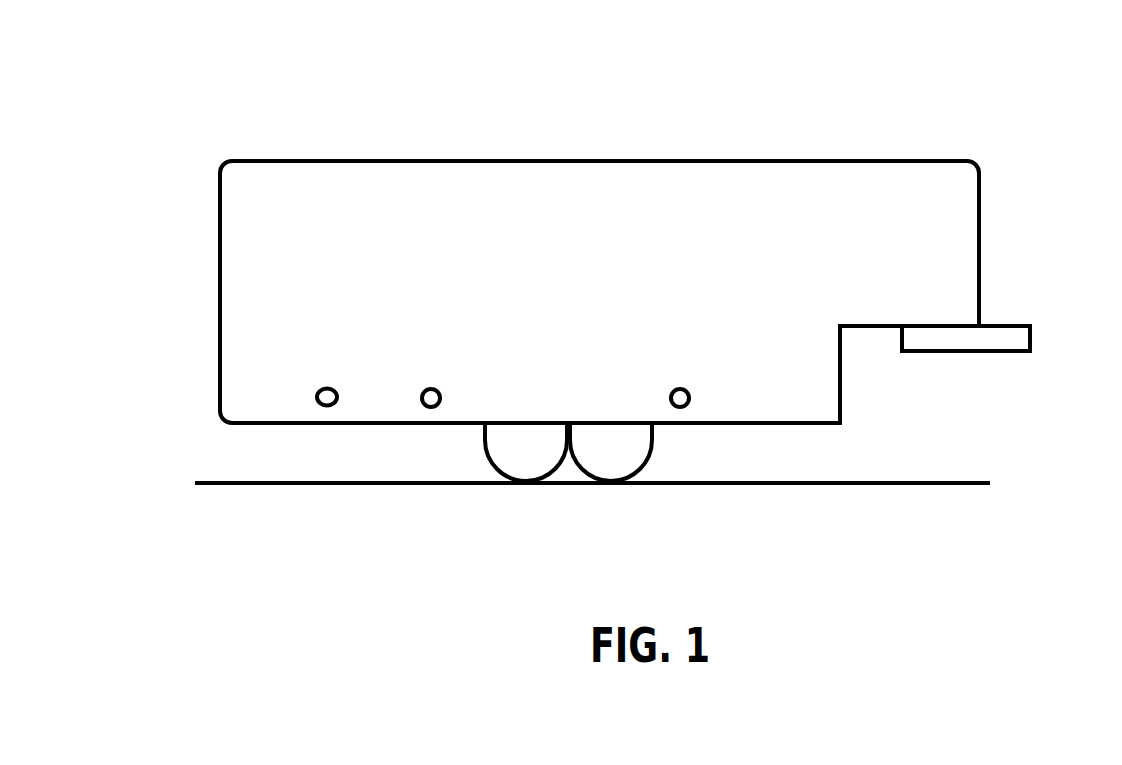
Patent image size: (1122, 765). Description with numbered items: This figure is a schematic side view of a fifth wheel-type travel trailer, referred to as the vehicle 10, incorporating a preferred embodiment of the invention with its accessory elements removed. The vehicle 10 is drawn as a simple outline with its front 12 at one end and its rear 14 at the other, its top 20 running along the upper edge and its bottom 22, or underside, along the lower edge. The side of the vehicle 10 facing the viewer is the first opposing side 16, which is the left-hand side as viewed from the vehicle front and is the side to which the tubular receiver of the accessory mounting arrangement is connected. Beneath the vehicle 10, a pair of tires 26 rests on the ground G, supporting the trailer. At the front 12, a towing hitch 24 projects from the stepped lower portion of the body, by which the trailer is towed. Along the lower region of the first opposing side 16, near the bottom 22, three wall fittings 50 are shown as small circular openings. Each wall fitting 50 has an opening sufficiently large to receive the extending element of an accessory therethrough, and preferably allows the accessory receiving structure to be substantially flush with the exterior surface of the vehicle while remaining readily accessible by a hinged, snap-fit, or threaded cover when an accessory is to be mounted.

The vehicle 10 is at (699, 110).
The front 12 is at (981, 236).
The rear 14 is at (218, 246).
The first opposing side 16 is at (757, 279).
The top 20 is at (421, 158).
The bottom 22 is at (738, 427).
The towing hitch 24 is at (975, 340).
The tires 26 is at (541, 461).
The wall fitting 50 is at (336, 388).
The ground G is at (887, 480).